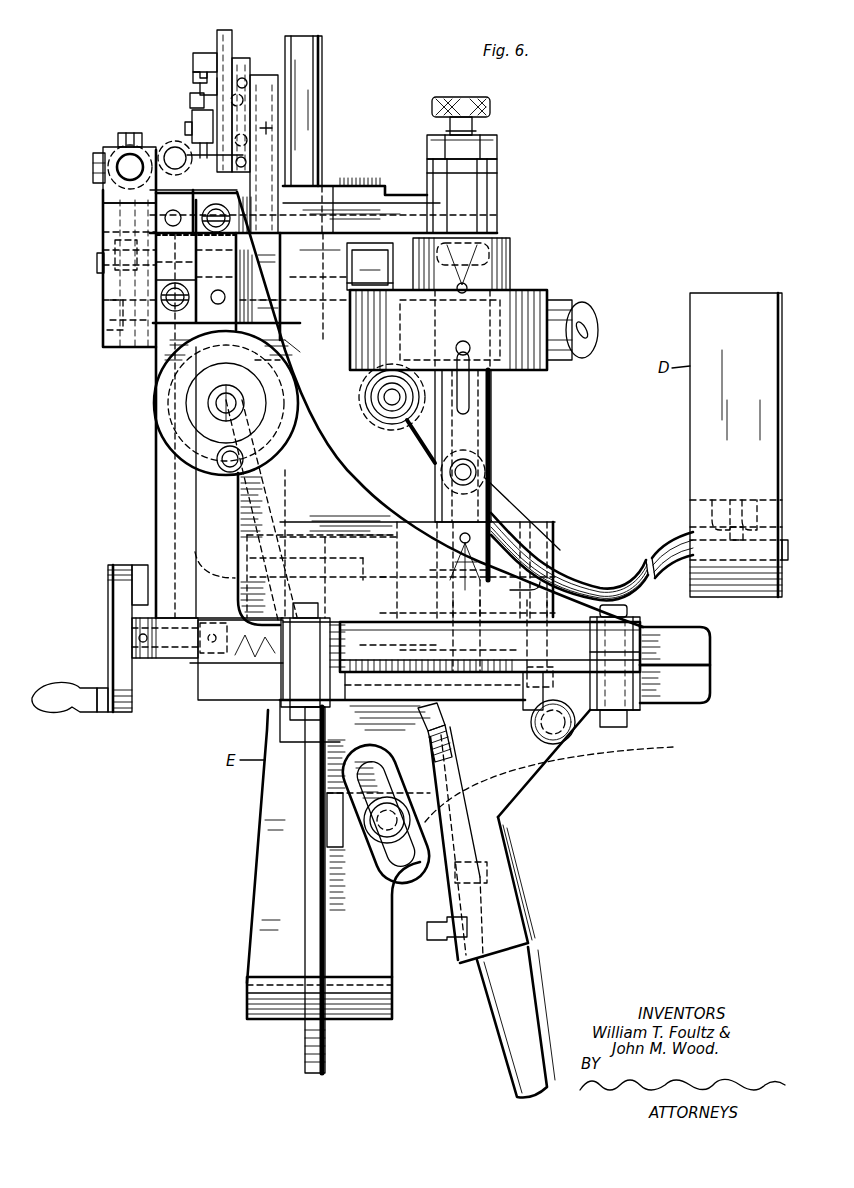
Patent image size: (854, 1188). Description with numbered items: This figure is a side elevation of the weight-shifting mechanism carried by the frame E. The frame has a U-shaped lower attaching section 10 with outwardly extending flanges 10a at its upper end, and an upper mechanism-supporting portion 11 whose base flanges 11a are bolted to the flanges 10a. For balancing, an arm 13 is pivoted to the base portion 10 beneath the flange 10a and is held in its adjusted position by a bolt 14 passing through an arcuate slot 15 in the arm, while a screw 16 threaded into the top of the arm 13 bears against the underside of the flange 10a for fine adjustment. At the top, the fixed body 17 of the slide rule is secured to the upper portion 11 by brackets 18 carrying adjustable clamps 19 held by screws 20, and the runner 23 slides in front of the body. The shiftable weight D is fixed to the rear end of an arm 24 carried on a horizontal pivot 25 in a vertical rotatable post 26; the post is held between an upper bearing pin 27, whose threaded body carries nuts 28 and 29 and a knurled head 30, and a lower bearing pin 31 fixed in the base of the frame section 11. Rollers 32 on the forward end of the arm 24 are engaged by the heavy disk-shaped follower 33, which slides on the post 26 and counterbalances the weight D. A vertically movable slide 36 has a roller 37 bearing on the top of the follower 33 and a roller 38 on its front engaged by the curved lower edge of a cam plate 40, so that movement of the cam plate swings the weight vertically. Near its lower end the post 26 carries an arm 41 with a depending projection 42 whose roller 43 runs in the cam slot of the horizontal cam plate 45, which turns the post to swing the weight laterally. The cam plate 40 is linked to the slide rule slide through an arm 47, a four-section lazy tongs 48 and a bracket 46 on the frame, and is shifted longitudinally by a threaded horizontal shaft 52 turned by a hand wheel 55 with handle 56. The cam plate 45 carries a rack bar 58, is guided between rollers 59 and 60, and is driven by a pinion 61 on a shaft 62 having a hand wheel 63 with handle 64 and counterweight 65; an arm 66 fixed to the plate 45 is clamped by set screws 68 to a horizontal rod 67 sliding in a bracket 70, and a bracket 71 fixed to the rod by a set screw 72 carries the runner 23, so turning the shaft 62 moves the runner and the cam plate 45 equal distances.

The lower attaching section 10 is at (378, 957).
The outwardly extending flanges 10a is at (675, 684).
The upper mechanism supporting portion 11 is at (162, 498).
The base flanges 11a is at (675, 646).
The arm 13 is at (518, 794).
The bolt 14 is at (432, 796).
The arcuate slot 15 is at (371, 760).
The screw 16 is at (425, 748).
The fixed body portion 17 is at (196, 97).
The brackets 18 is at (216, 38).
The adjustable clamps 19 is at (194, 60).
The screws 20 is at (193, 77).
The runner 23 is at (191, 124).
The arm 24 is at (505, 509).
The horizontal pivot 25 is at (470, 474).
The post 26 is at (496, 434).
The bearing pin 27 is at (476, 136).
The nut 28 is at (497, 156).
The nut 29 is at (498, 243).
The knurled head 30 is at (490, 110).
The lower bearing pin 31 is at (473, 606).
The rollers 32 is at (389, 422).
The follower 33 is at (555, 296).
The slide 36 is at (322, 112).
The roller 37 is at (384, 254).
The roller 38 is at (281, 359).
The cam plate 40 is at (296, 352).
The arm 41 is at (426, 520).
The depending projection 42 is at (548, 615).
The roller 43 is at (523, 675).
The cam plate 45 is at (461, 673).
The bracket 46 is at (173, 153).
The arm 47 is at (266, 93).
The lazy tongs 48 is at (243, 76).
The horizontal shaft 52 is at (231, 418).
The hand wheel 55 is at (160, 393).
The handle 56 is at (228, 473).
The rack bar 58 is at (392, 690).
The guide roller 59 is at (286, 688).
The guide roller 60 is at (635, 629).
The pinion 61 is at (348, 623).
The horizontal shaft 62 is at (265, 655).
The hand wheel 63 is at (132, 682).
The handle 64 is at (57, 695).
The counterweight 65 is at (143, 565).
The arm 66 is at (262, 506).
The horizontal rod 67 is at (124, 165).
The set screws 68 is at (126, 145).
The bracket 70 is at (106, 218).
The bracket 71 is at (104, 183).
The set screw 72 is at (97, 168).